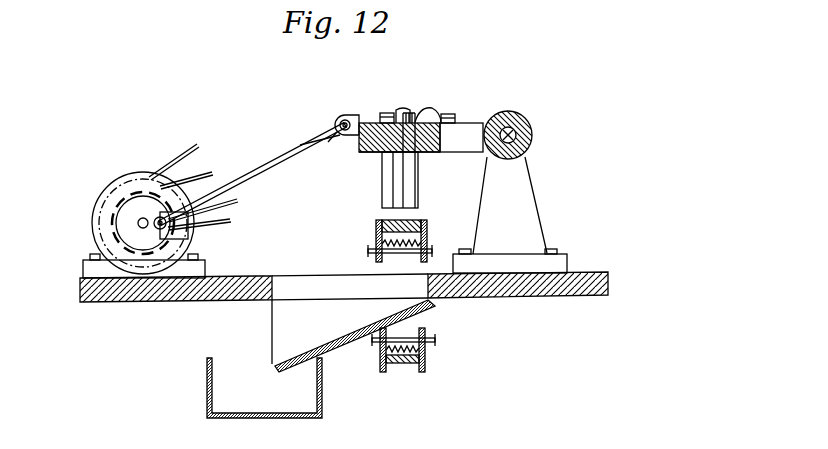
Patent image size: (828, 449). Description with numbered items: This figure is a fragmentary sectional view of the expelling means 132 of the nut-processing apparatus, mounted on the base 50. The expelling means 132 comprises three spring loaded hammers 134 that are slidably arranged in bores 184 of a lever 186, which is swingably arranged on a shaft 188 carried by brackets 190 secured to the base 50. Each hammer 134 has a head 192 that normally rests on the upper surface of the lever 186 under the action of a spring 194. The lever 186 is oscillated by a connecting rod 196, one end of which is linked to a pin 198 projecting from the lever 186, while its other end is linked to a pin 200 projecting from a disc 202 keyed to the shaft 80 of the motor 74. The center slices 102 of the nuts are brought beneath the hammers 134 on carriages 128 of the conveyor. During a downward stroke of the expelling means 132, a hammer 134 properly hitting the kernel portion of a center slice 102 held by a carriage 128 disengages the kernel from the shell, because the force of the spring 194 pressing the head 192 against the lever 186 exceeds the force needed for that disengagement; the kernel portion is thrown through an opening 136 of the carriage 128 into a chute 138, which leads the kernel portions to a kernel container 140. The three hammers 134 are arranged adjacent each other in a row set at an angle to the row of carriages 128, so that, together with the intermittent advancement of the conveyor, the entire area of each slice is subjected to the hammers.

The base 50 is at (100, 302).
The motor 74 is at (94, 237).
The shaft 80 is at (137, 222).
The disc 202 is at (114, 206).
The pin 200 is at (190, 239).
The connecting rod 196 is at (262, 166).
The pin 198 is at (340, 120).
The lever 186 is at (328, 143).
The bores 184 is at (456, 120).
The head 192 is at (396, 118).
The spring 194 is at (418, 114).
The expelling means 132 is at (362, 151).
The center slices 102 is at (426, 218).
The hammers 134 is at (405, 179).
The carriages 128 is at (376, 233).
The opening 136 is at (376, 240).
The shaft 188 is at (521, 125).
The brackets 190 is at (531, 201).
The chute 138 is at (279, 324).
The kernel container 140 is at (221, 386).